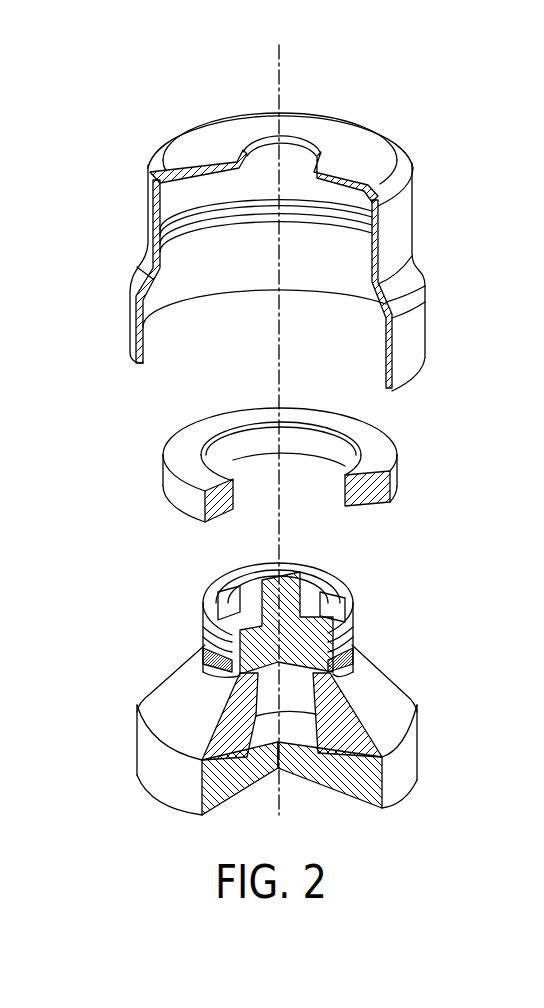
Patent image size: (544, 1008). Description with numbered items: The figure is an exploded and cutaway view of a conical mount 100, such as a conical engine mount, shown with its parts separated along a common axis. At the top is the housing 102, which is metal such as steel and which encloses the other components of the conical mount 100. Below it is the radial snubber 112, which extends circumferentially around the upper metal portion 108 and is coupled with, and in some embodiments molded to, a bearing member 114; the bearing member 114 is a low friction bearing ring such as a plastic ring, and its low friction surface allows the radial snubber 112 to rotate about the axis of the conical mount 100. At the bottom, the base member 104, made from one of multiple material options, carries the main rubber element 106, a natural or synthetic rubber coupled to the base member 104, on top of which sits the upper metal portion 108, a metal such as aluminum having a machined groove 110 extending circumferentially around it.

The conical mount 100 is at (135, 101).
The housing 102 is at (213, 153).
The base member 104 is at (395, 771).
The main rubber element 106 is at (372, 706).
The upper metal portion 108 is at (273, 620).
The machined groove 110 is at (342, 646).
The radial snubber 112 is at (301, 455).
The bearing member 114 is at (245, 445).